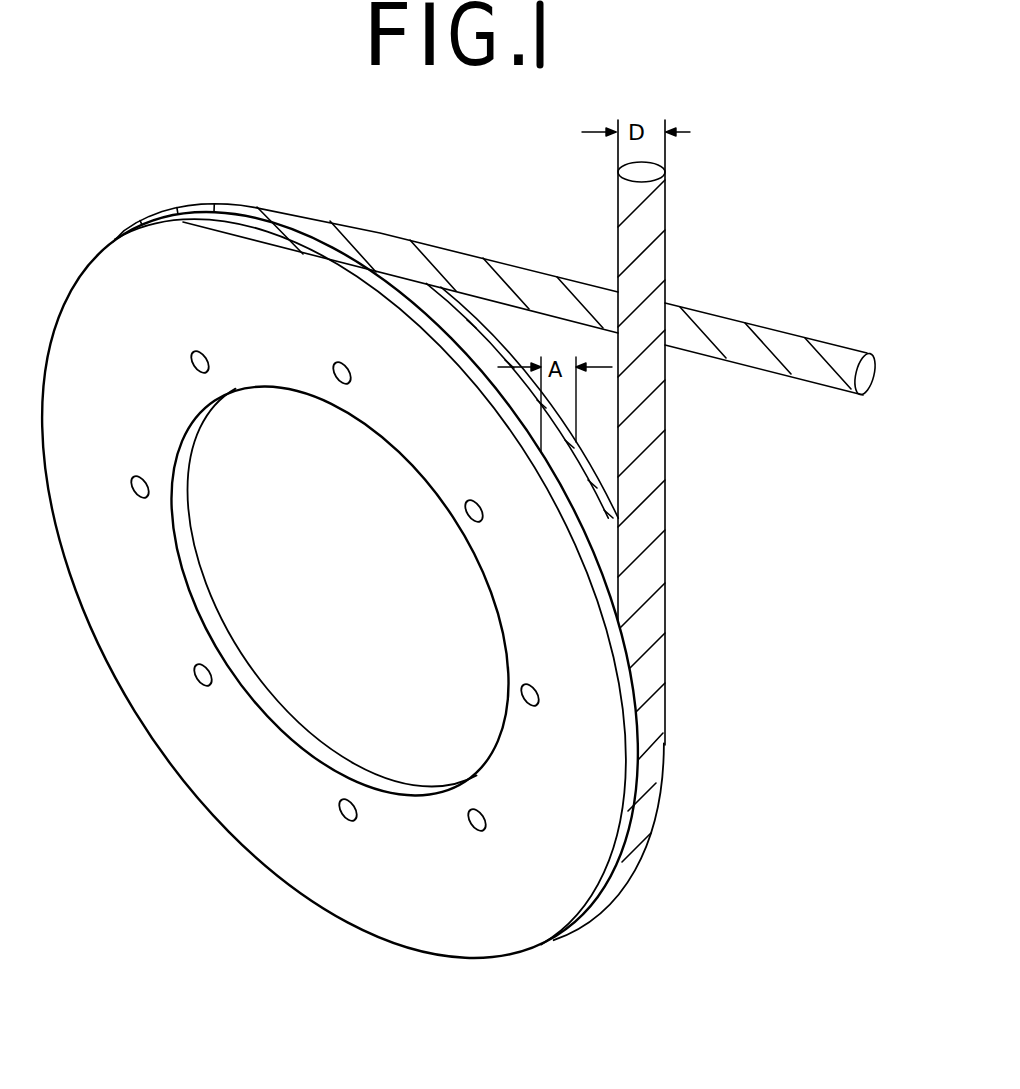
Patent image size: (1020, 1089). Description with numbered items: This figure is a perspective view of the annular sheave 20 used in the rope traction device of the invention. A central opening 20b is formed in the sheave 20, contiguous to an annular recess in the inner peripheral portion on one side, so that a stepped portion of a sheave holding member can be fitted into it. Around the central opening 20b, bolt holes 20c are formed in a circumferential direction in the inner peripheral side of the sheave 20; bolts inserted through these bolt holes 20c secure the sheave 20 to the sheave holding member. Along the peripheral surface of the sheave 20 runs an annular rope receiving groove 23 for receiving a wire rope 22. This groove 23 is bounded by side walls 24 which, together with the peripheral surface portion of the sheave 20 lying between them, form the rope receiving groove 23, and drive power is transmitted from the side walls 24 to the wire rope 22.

The sheave 20 is at (250, 867).
The central opening 20b is at (338, 650).
The bolt holes 20c is at (478, 822).
The wire rope 22 is at (655, 468).
The rope receiving groove 23 is at (608, 543).
The side walls 24 is at (442, 380).